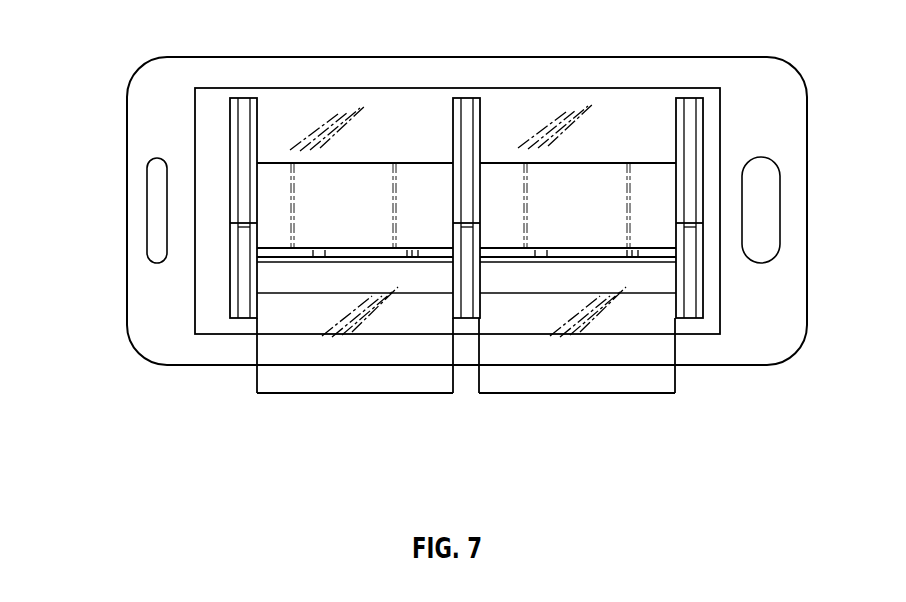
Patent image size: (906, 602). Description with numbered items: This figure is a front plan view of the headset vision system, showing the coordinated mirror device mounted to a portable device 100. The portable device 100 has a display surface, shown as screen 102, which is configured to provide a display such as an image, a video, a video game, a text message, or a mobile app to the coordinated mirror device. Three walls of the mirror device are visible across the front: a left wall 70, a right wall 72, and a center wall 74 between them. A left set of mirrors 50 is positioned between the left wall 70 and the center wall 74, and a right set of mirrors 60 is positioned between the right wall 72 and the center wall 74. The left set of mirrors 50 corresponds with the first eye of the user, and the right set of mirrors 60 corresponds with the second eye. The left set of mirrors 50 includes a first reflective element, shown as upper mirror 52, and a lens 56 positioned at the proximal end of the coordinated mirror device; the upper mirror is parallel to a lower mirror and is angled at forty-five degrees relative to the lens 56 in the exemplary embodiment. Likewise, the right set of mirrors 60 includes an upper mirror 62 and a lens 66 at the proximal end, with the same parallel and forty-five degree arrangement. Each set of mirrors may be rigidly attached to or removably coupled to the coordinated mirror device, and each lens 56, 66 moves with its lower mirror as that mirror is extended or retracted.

The portable device 100 is at (120, 202).
The screen 102 is at (710, 105).
The left wall 70 is at (244, 106).
The center wall 74 is at (467, 106).
The right wall 72 is at (688, 106).
The left set of mirrors 50 is at (355, 290).
The upper mirror 52 is at (373, 185).
The lens 56 is at (283, 393).
The right set of mirrors 60 is at (577, 289).
The upper mirror 62 is at (595, 185).
The lens 66 is at (508, 393).